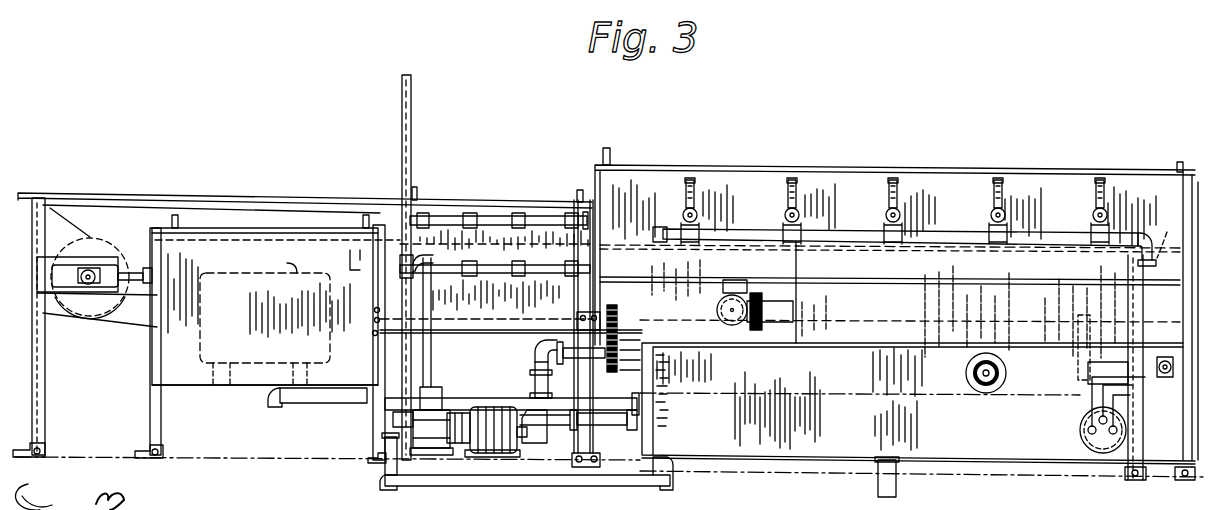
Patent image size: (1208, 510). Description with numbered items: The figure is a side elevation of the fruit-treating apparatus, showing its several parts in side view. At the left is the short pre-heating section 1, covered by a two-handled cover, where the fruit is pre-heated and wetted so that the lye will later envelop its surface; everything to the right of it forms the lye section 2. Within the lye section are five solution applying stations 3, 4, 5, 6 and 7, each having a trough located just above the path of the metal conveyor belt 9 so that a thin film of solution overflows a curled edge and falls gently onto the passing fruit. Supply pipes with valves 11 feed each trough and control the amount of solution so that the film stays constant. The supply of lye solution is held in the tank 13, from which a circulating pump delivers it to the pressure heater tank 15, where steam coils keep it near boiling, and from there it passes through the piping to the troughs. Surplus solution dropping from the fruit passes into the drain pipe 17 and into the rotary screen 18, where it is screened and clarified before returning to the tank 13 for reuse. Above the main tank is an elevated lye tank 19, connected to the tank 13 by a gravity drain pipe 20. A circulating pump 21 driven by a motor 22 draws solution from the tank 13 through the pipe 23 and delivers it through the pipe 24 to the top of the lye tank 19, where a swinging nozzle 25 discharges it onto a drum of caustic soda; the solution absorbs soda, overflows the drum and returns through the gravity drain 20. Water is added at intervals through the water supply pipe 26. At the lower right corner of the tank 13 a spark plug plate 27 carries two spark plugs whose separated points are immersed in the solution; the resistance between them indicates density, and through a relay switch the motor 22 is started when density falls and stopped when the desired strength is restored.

The pre-heating section 1 is at (488, 212).
The lye section 2 is at (947, 186).
The solution applying station 3 is at (690, 180).
The solution applying station 4 is at (792, 180).
The solution applying station 5 is at (893, 180).
The solution applying station 6 is at (998, 180).
The solution applying station 7 is at (1100, 183).
The metal conveyor belt 9 is at (1152, 240).
The valve 11 is at (888, 218).
The tank 13 is at (774, 443).
The pressure heater tank 15 is at (647, 322).
The drain pipe 17 is at (720, 291).
The rotary screen 18 is at (910, 307).
The lye tank 19 is at (239, 385).
The gravity drain pipe 20 is at (460, 400).
The circulating pump 21 is at (426, 393).
The motor 22 is at (500, 455).
The pipe 23 is at (612, 486).
The pipe 24 is at (425, 344).
The swinging nozzle 25 is at (290, 268).
The water supply pipe 26 is at (982, 392).
The spark plug plate 27 is at (1080, 434).